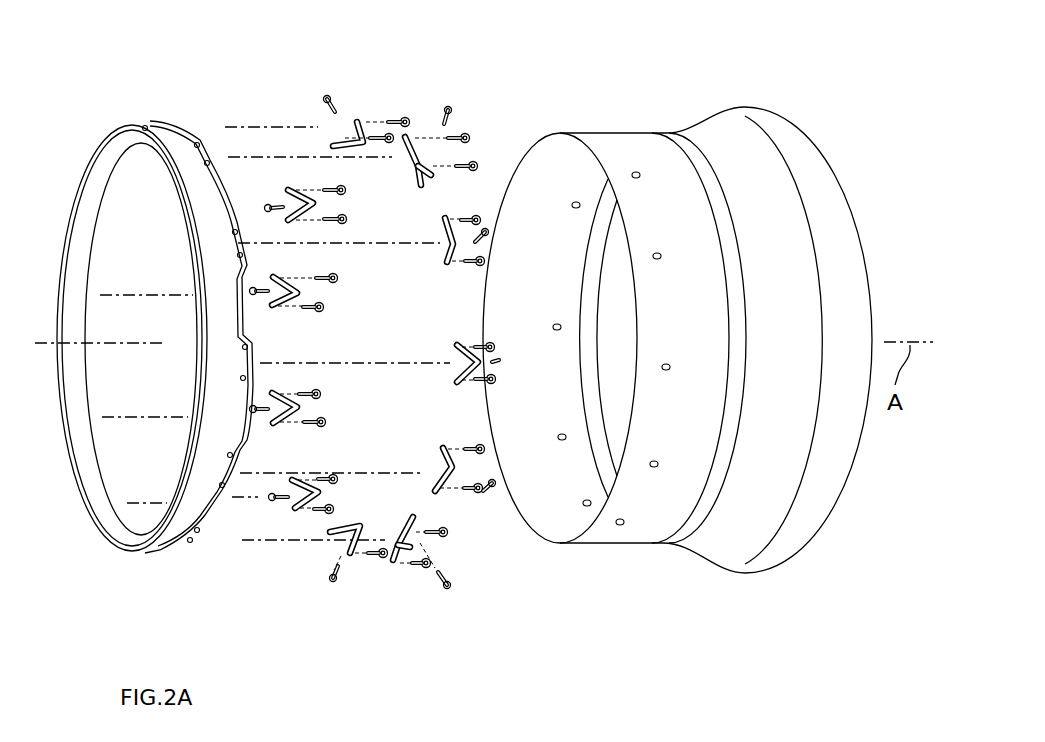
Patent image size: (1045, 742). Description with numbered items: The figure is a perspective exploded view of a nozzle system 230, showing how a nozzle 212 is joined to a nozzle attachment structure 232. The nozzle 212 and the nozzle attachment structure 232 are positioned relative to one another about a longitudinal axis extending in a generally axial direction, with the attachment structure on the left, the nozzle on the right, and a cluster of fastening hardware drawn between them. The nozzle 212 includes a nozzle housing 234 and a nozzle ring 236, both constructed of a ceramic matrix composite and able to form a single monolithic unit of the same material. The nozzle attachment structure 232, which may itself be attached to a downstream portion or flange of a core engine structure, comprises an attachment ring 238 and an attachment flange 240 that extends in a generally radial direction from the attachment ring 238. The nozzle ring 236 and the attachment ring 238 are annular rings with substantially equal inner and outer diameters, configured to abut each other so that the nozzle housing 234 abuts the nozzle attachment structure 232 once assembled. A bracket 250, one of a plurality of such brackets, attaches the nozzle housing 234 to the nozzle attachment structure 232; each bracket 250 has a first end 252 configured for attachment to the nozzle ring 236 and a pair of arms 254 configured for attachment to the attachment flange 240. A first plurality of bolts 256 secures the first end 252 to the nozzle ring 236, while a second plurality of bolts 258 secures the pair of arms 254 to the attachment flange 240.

The nozzle system 230 is at (170, 55).
The nozzle attachment structure 232 is at (108, 172).
The attachment ring 238 is at (176, 522).
The attachment flange 240 is at (228, 472).
The bracket 250 is at (424, 103).
The first end 252 is at (315, 204).
The pair of arms 254 is at (358, 121).
The first plurality of bolts 256 is at (455, 110).
The second plurality of bolts 258 is at (425, 532).
The nozzle housing 234 is at (814, 545).
The nozzle ring 236 is at (668, 312).
The nozzle 212 is at (724, 556).